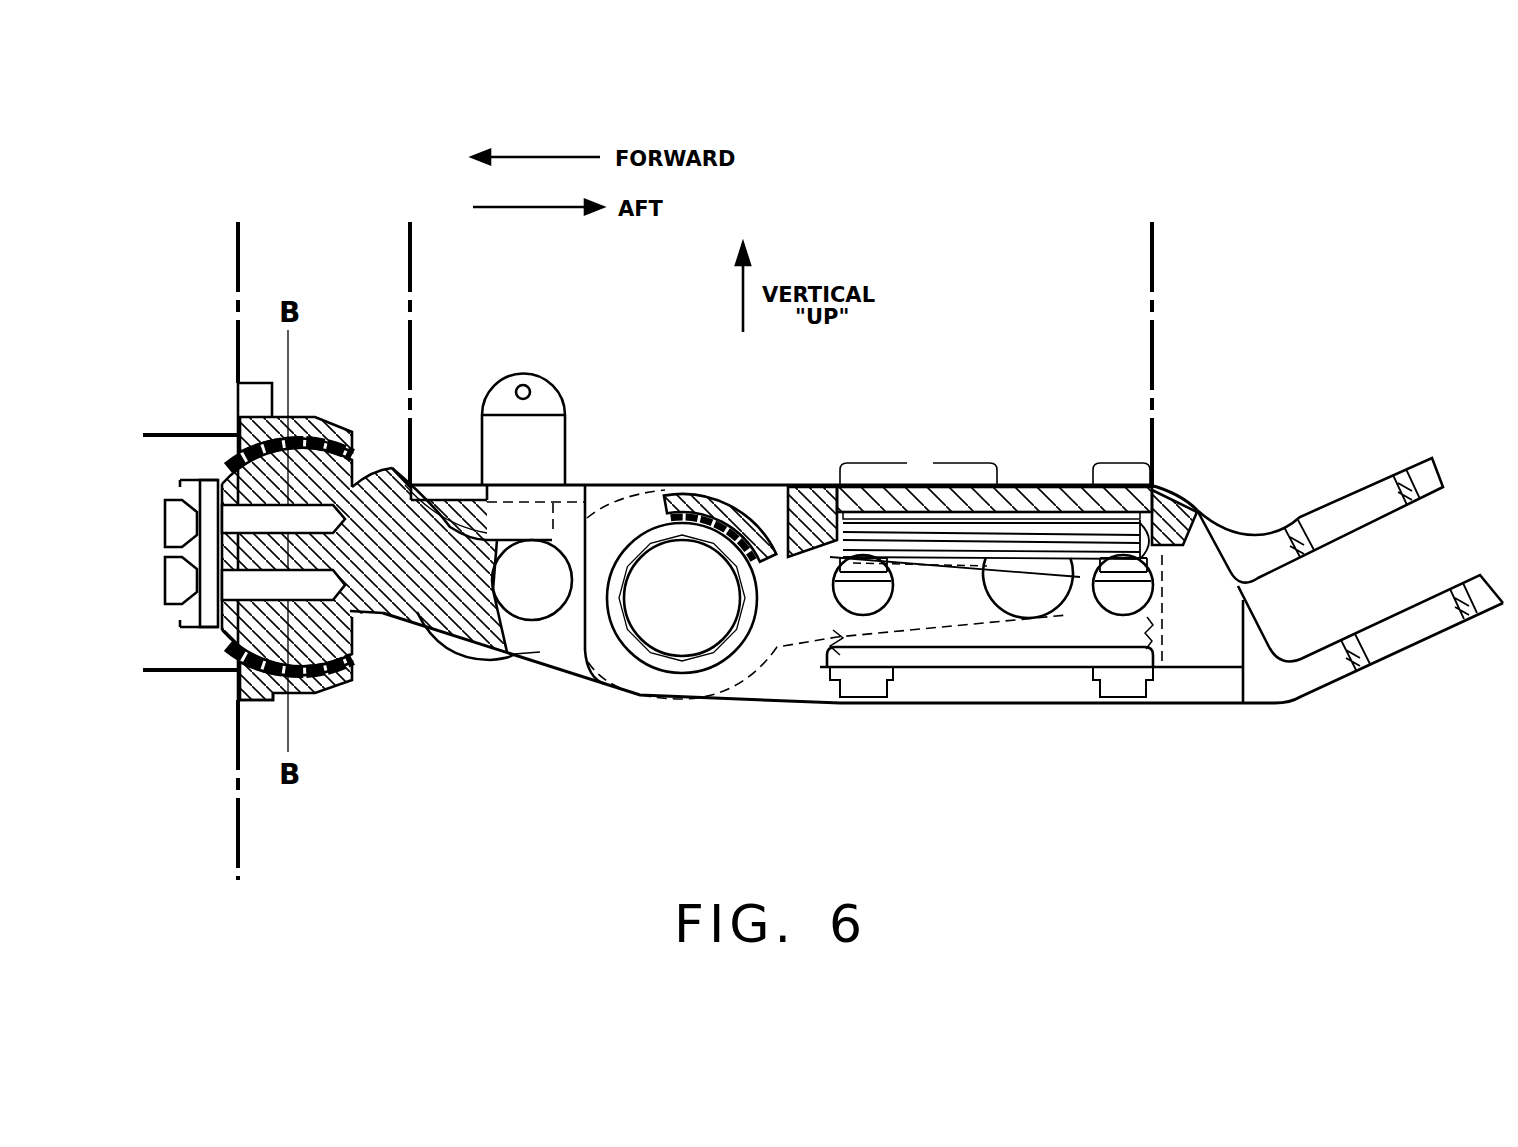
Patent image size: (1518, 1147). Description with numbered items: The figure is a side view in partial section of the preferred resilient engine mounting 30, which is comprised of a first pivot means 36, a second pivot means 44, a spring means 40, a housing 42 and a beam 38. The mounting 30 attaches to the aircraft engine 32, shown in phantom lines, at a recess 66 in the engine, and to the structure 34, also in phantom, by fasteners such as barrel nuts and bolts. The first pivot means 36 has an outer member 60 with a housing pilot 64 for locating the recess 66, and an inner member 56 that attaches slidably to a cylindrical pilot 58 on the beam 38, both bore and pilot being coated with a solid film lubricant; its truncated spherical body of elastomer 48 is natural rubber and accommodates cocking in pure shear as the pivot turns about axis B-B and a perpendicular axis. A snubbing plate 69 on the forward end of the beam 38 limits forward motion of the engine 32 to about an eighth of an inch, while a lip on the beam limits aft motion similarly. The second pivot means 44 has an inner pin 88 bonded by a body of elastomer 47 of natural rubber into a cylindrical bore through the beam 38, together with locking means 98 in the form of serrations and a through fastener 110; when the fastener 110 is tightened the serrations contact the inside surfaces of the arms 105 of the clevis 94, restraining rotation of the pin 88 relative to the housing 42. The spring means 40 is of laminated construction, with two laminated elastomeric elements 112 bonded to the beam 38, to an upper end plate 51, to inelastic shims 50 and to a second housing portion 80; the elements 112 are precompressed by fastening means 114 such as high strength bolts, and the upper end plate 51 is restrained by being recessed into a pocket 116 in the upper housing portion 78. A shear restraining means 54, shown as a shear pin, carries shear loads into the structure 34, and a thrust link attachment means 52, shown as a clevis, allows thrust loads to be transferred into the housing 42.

The resilient engine mounting 30 is at (950, 775).
The aircraft engine 32 is at (197, 767).
The structure 34 is at (1035, 302).
The first pivot means 36 is at (370, 700).
The beam 38 is at (386, 635).
The spring means 40 is at (1031, 728).
The housing 42 is at (547, 665).
The second pivot means 44 is at (704, 730).
The body of elastomer 47 is at (767, 492).
The truncated spherical body of elastomer 48 is at (370, 465).
The inelastic shim 50 is at (1147, 493).
The upper end plate 51 is at (927, 520).
The thrust link attachment means 52 is at (1420, 676).
The shear restraining means 54 is at (535, 442).
The inner member 56 is at (343, 690).
The cylindrical pilot 58 is at (400, 467).
The outer member 60 is at (310, 414).
The housing pilot 64 is at (212, 455).
The recess 66 is at (175, 432).
The snubbing plate 69 is at (182, 622).
The upper housing portion 78 is at (630, 487).
The second housing portion 80 is at (1060, 690).
The inner pin 88 is at (707, 492).
The clevis 94 is at (540, 645).
The locking means 98 is at (738, 652).
The arms 105 is at (568, 664).
The through fastener 110 is at (670, 613).
The laminated elastomeric elements 112 is at (1066, 645).
The fastening means 114 is at (873, 690).
The pocket 116 is at (997, 465).